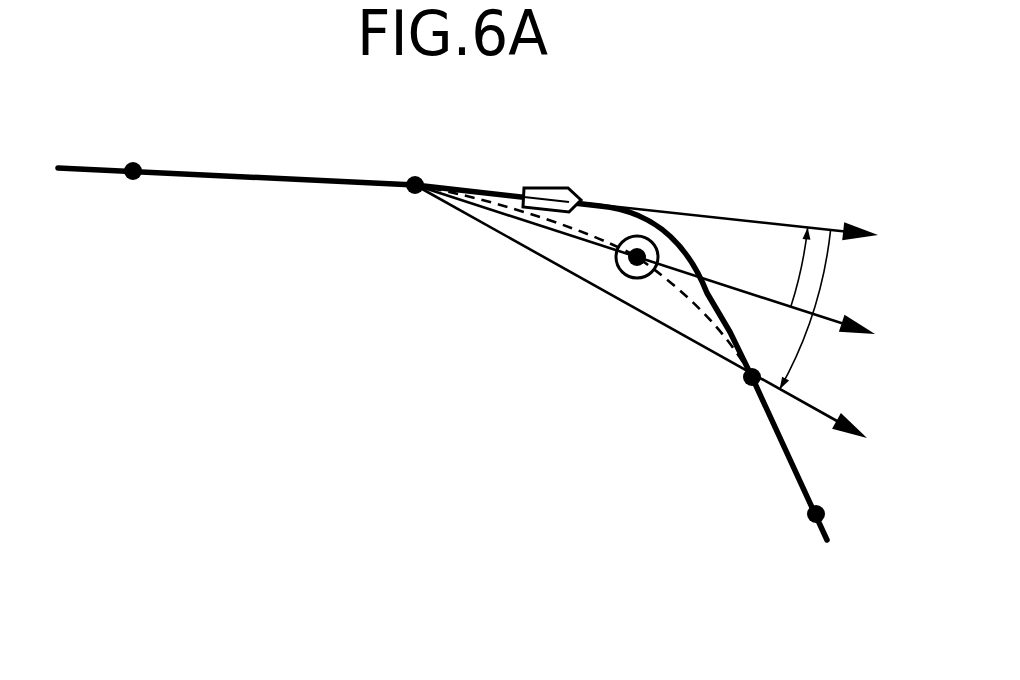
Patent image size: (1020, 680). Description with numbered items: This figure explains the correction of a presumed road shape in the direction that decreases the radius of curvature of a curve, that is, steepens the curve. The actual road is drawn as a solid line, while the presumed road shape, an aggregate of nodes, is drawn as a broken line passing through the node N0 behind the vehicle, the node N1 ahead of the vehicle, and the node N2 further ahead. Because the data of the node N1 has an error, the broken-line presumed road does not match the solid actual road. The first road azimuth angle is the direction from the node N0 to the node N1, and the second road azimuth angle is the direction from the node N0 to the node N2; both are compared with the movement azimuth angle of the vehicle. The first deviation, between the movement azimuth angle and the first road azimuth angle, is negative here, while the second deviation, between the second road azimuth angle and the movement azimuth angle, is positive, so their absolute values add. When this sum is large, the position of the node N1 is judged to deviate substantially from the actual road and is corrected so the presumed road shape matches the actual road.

The node behind the vehicle position N0 is at (412, 194).
The node ahead of the vehicle position N1 is at (640, 243).
The node further ahead N2 is at (743, 381).